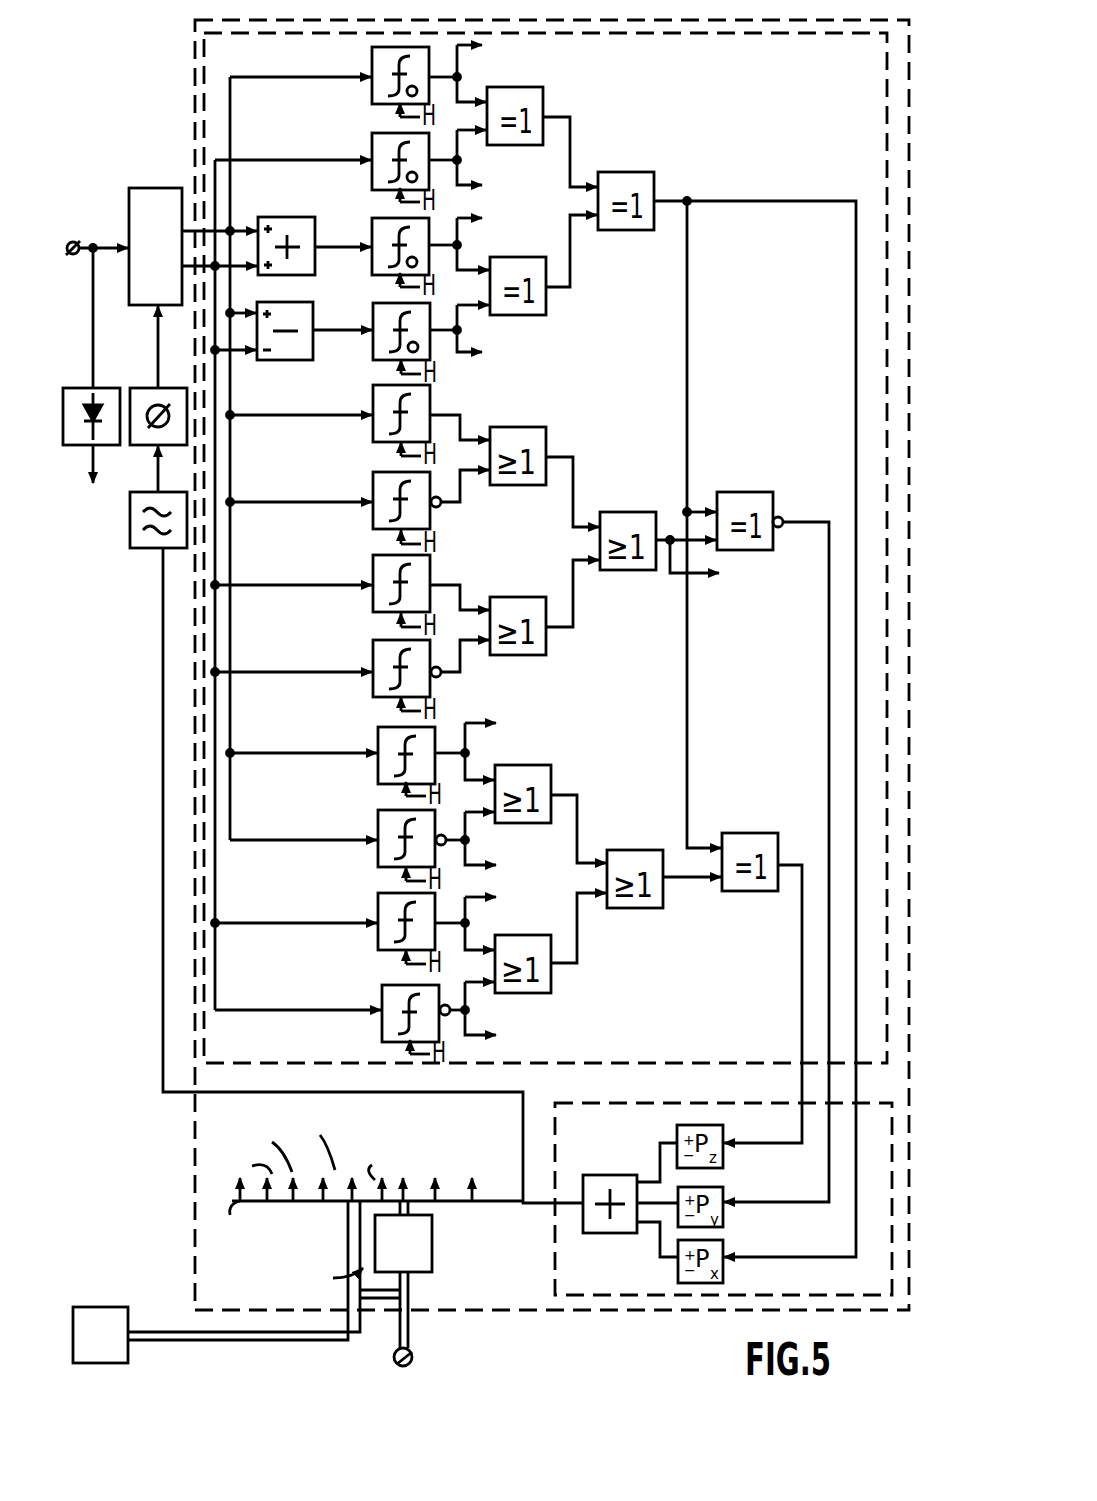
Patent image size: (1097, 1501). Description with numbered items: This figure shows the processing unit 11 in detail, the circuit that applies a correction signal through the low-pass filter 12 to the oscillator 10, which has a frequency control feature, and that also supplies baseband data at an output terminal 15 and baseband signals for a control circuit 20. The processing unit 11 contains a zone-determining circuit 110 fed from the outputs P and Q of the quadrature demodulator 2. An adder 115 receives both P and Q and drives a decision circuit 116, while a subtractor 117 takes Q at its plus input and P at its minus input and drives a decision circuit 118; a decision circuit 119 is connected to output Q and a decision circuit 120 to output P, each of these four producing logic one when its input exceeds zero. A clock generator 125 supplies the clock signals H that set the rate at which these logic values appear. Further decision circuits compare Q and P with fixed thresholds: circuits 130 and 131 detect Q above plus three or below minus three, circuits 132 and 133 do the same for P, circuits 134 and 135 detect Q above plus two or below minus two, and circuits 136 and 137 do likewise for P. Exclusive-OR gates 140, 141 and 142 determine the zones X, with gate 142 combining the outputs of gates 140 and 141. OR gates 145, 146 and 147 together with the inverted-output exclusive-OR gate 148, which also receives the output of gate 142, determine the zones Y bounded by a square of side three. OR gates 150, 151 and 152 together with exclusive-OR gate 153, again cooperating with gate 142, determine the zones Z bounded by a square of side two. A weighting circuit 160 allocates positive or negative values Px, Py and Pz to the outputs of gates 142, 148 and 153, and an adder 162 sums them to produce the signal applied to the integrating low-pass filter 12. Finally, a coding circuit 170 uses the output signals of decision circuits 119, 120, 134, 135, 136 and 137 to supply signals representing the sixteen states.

The quadrature demodulator 2 is at (158, 187).
The oscillator 10 is at (150, 388).
The processing unit 11 is at (205, 1250).
The low-pass filter 12 is at (150, 548).
The output terminal 15 is at (413, 1353).
The control circuit 20 is at (106, 1326).
The zone-determining circuit 110 is at (602, 1052).
The adder 115 is at (280, 238).
The decision circuit 116 is at (373, 228).
The subtractor 117 is at (287, 345).
The decision circuit 118 is at (382, 312).
The decision circuit 119 is at (372, 90).
The decision circuit 120 is at (380, 150).
The clock generator 125 is at (74, 425).
The decision circuit 130 is at (374, 434).
The decision circuit 131 is at (372, 520).
The decision circuit 132 is at (372, 602).
The decision circuit 133 is at (372, 688).
The decision circuit 134 is at (377, 768).
The decision circuit 135 is at (377, 863).
The decision circuit 136 is at (377, 943).
The decision circuit 137 is at (381, 1023).
The EXCLUSIVE-OR gate 140 is at (536, 98).
The EXCLUSIVE-OR gate 141 is at (538, 300).
The EXCLUSIVE-OR gate 142 is at (624, 235).
The OR-gate 145 is at (520, 432).
The OR-gate 146 is at (535, 652).
The OR-gate 147 is at (628, 560).
The EXCLUSIVE-OR gate with inverted output 148 is at (746, 500).
The OR-gate 150 is at (537, 768).
The OR-gate 151 is at (548, 975).
The OR-gate 152 is at (635, 850).
The EXCLUSIVE-OR gate 153 is at (743, 833).
The weighting circuit 160 is at (738, 1133).
The adder 162 is at (598, 1186).
The coding circuit 170 is at (432, 1250).